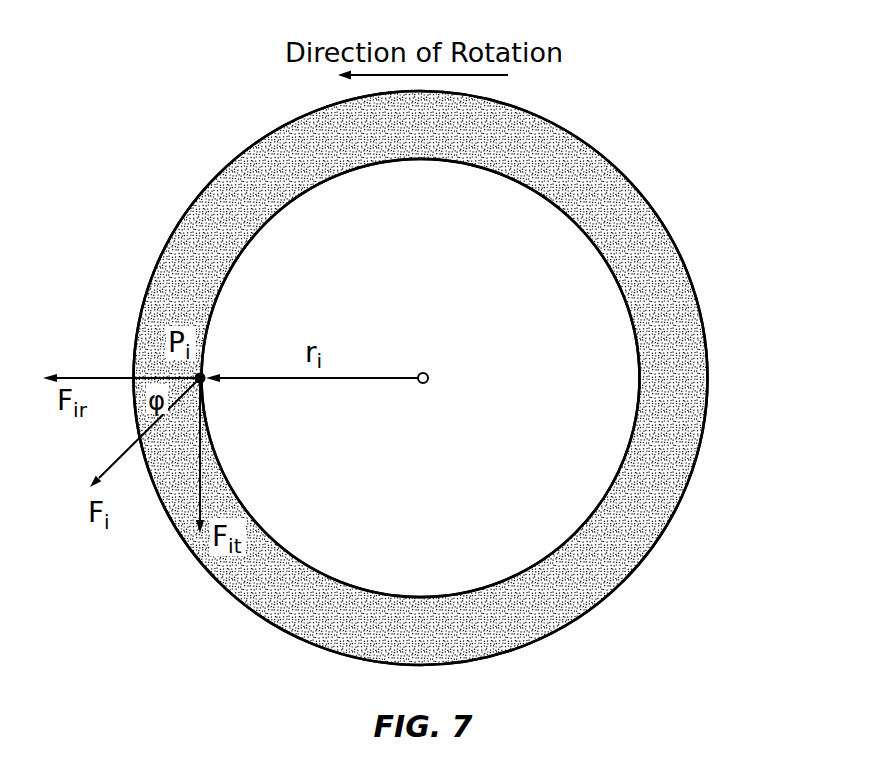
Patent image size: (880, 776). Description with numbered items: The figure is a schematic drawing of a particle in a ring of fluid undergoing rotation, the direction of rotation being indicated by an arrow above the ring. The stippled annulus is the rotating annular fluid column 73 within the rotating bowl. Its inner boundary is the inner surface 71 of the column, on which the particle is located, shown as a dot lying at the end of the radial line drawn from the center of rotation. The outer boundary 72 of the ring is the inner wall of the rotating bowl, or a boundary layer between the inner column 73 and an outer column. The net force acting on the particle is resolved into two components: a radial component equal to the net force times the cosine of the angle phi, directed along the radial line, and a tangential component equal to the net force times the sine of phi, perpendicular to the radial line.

The inner surface of the rotating annular fluid column 71 is at (639, 378).
The inner wall of the rotating bowl 72 is at (687, 493).
The rotating annular fluid column 73 is at (408, 137).